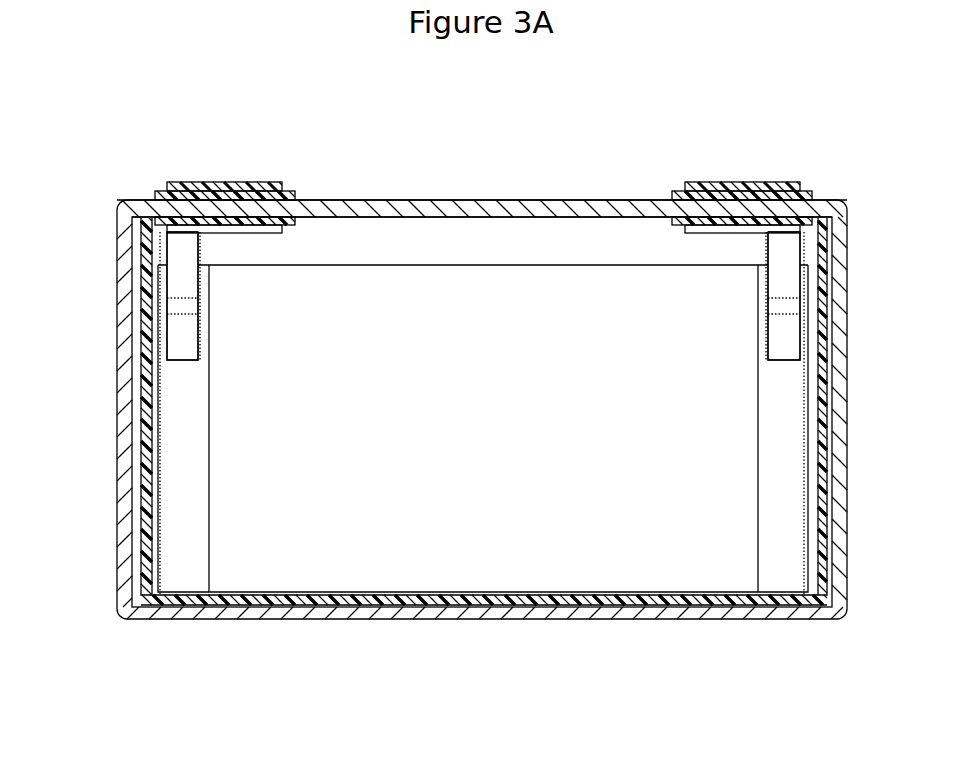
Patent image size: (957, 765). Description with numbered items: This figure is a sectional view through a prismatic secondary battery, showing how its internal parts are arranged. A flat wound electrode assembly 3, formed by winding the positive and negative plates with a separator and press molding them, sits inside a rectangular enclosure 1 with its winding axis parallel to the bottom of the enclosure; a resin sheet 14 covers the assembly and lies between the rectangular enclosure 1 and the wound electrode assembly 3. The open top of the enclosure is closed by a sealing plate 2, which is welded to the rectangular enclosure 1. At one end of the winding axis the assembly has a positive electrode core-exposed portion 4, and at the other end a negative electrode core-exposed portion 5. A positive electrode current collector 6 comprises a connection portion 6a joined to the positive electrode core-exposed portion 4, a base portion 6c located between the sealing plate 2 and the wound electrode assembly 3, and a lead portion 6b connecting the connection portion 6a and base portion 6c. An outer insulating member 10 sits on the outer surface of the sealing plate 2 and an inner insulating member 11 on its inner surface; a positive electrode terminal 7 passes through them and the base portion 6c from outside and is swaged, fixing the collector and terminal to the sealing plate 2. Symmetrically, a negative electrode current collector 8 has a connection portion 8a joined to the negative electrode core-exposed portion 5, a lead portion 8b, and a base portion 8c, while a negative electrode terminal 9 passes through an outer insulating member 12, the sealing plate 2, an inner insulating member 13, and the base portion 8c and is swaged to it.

The rectangular enclosure 1 is at (695, 619).
The sealing plate 2 is at (566, 207).
The wound electrode assembly 3 is at (420, 572).
The positive electrode core-exposed portion 4 is at (175, 515).
The negative electrode core-exposed portion 5 is at (780, 516).
The positive electrode current collector 6 is at (47, 233).
The connection portion 6a is at (175, 332).
The lead portion 6b is at (175, 305).
The base portion 6c is at (175, 228).
The positive electrode terminal 7 is at (173, 182).
The negative electrode current collector 8 is at (913, 240).
The connection portion 8a is at (790, 340).
The lead portion 8b is at (788, 307).
The base portion 8c is at (793, 228).
The negative electrode terminal 9 is at (788, 182).
The outer insulating member 10 is at (288, 190).
The inner insulating member 11 is at (298, 218).
The outer insulating member 12 is at (680, 190).
The inner insulating member 13 is at (668, 216).
The resin sheet 14 is at (219, 600).